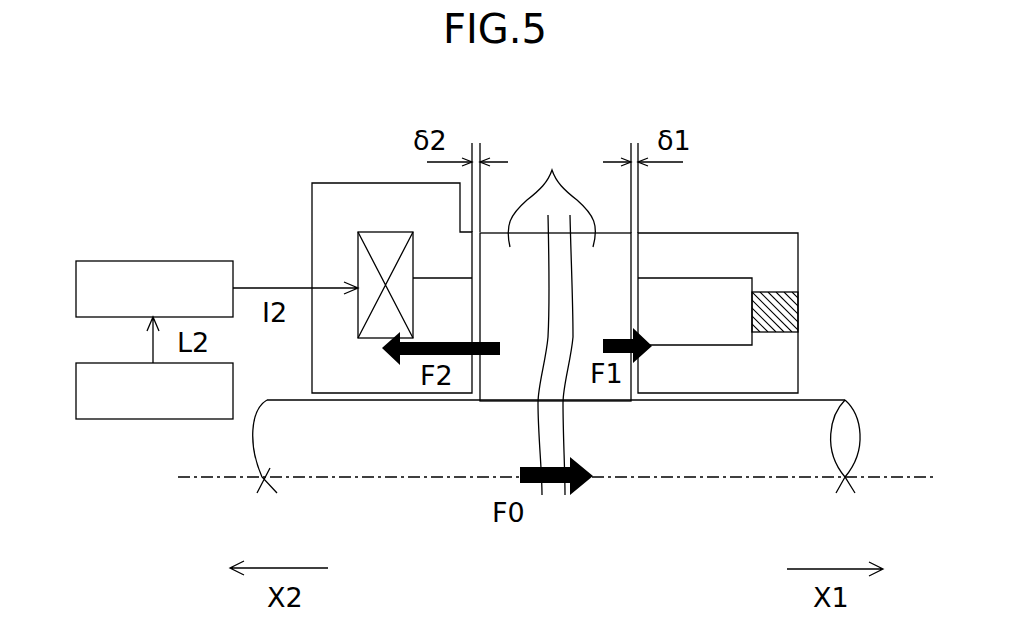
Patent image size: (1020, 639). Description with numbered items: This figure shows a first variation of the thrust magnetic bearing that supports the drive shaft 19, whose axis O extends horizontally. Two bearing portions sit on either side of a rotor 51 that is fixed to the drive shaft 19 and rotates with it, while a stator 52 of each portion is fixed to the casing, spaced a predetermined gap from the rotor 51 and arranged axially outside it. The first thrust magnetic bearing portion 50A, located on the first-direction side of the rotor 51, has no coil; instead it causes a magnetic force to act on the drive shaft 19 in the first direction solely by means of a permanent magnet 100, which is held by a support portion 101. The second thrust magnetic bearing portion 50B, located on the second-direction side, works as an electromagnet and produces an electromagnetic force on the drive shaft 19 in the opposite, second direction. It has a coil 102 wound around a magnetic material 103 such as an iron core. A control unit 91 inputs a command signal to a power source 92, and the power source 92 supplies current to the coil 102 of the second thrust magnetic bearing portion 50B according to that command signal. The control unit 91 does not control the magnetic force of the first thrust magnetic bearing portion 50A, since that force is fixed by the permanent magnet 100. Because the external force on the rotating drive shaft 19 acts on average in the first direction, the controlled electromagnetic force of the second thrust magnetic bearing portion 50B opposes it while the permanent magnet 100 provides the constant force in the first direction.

The drive shaft 19 is at (752, 450).
The axis O is at (193, 477).
The first thrust magnetic bearing portion 50A is at (693, 236).
The second thrust magnetic bearing portion 50B is at (340, 231).
The rotor 51 is at (551, 313).
The stator 52 is at (313, 370).
The control unit 91 is at (103, 363).
The power source 92 is at (113, 261).
The permanent magnet 100 is at (785, 308).
The support portion 101 is at (765, 252).
The coil 102 is at (358, 266).
The magnetic material 103 is at (352, 200).